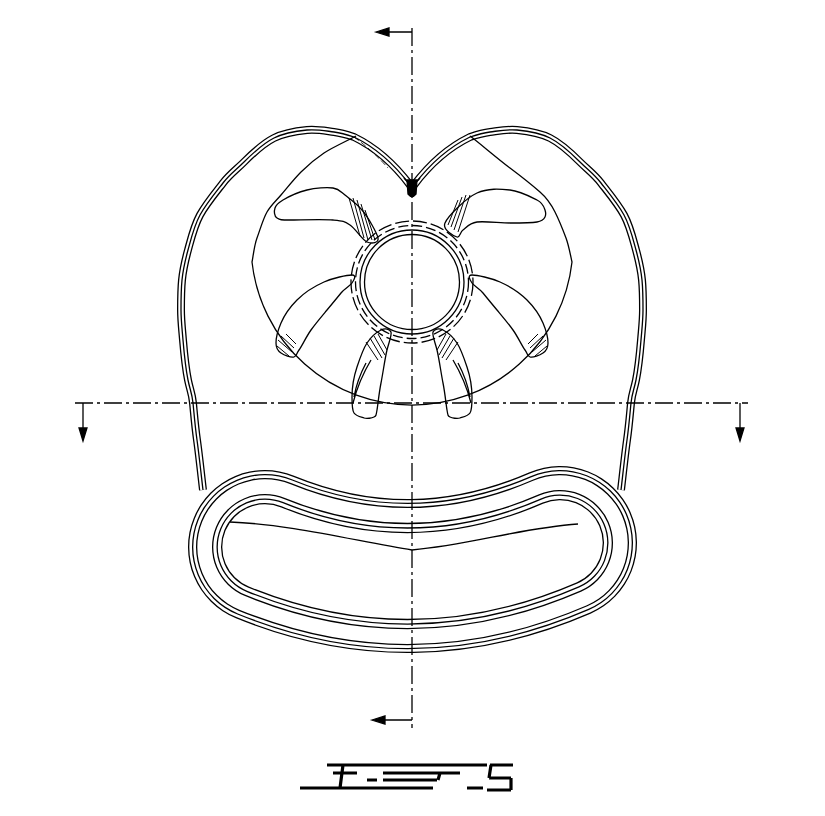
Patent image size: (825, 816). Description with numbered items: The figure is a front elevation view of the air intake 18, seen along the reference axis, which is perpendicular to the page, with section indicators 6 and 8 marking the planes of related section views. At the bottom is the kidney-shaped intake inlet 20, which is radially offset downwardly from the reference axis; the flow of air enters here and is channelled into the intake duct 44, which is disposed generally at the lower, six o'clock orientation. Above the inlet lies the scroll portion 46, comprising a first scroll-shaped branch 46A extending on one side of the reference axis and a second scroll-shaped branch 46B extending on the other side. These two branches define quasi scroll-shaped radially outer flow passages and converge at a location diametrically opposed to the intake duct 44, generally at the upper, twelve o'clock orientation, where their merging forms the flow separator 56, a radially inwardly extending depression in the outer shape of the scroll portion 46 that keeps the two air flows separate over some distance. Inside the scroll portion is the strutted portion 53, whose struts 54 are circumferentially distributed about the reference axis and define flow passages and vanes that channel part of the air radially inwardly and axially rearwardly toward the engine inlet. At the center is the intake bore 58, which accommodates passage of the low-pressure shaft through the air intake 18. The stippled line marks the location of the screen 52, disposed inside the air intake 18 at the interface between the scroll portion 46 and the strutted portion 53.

The air intake 18 is at (438, 368).
The intake inlet 20 is at (393, 597).
The intake duct 44 is at (496, 590).
The scroll portion 46 is at (464, 288).
The first scroll-shaped branch 46A is at (222, 182).
The second scroll-shaped branch 46B is at (577, 187).
The screen 52 is at (527, 163).
The strutted portion 53 is at (368, 177).
The struts 54 is at (467, 374).
The flow separator 56 is at (428, 133).
The intake bore 58 is at (405, 278).
The section line 6- 6 is at (412, 409).
The section line 8- 8 is at (400, 377).